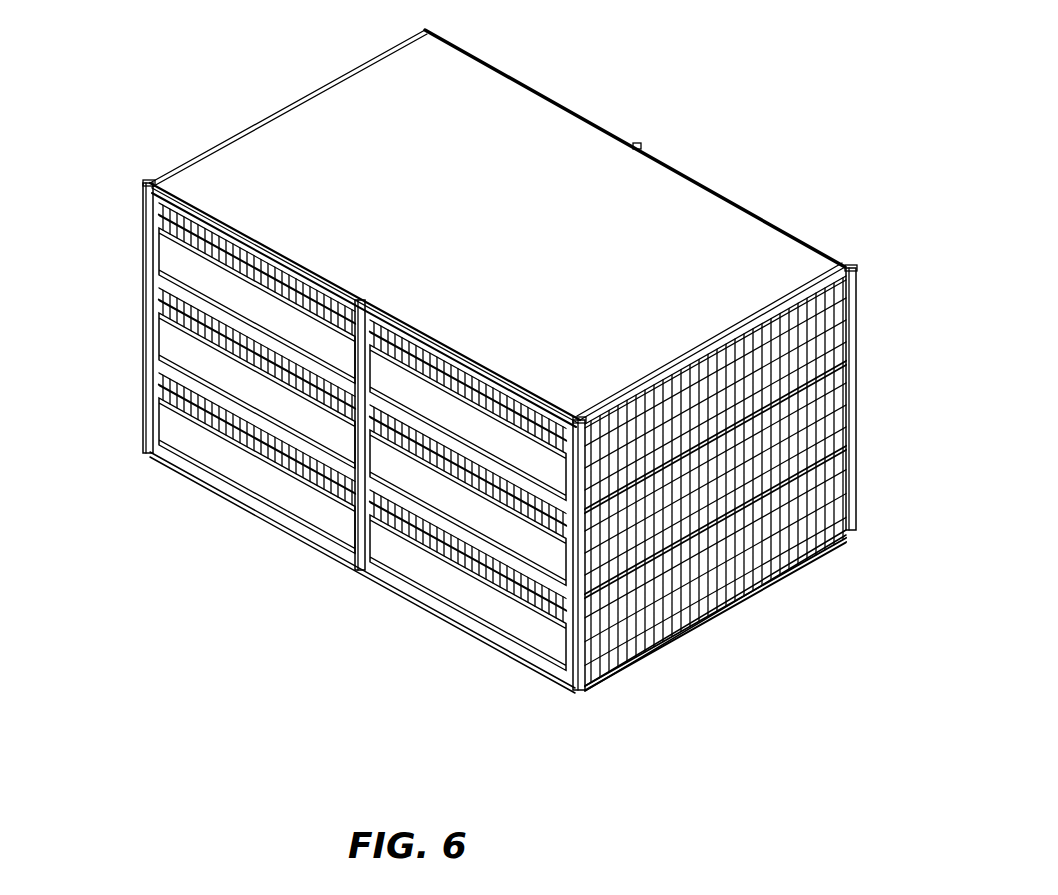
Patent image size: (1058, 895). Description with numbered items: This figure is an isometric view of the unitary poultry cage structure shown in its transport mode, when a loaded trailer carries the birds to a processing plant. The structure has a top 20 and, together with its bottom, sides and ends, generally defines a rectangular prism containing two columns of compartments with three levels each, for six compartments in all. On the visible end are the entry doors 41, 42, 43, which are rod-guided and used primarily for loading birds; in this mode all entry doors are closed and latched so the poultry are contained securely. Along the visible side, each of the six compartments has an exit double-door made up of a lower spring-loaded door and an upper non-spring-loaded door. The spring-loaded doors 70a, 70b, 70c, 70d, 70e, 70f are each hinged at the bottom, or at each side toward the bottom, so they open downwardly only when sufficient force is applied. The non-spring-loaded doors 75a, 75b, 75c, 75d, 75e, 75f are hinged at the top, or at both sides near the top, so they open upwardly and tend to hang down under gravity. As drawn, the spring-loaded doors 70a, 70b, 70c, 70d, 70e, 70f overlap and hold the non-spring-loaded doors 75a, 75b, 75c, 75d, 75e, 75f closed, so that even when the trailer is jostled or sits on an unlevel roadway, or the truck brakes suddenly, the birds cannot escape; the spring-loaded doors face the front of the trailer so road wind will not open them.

The top 20 is at (495, 177).
The entry door 41 is at (827, 343).
The entry door 42 is at (827, 422).
The entry door 43 is at (827, 513).
The spring-loaded door 70a is at (195, 275).
The spring-loaded door 70b is at (190, 353).
The spring-loaded door 70c is at (187, 437).
The spring-loaded door 70d is at (487, 437).
The spring-loaded door 70e is at (523, 545).
The spring-loaded door 70f is at (540, 650).
The non-spring-loaded door 75a is at (172, 214).
The non-spring-loaded door 75b is at (165, 297).
The non-spring-loaded door 75c is at (170, 379).
The non-spring-loaded door 75d is at (433, 368).
The non-spring-loaded door 75e is at (490, 483).
The non-spring-loaded door 75f is at (538, 603).